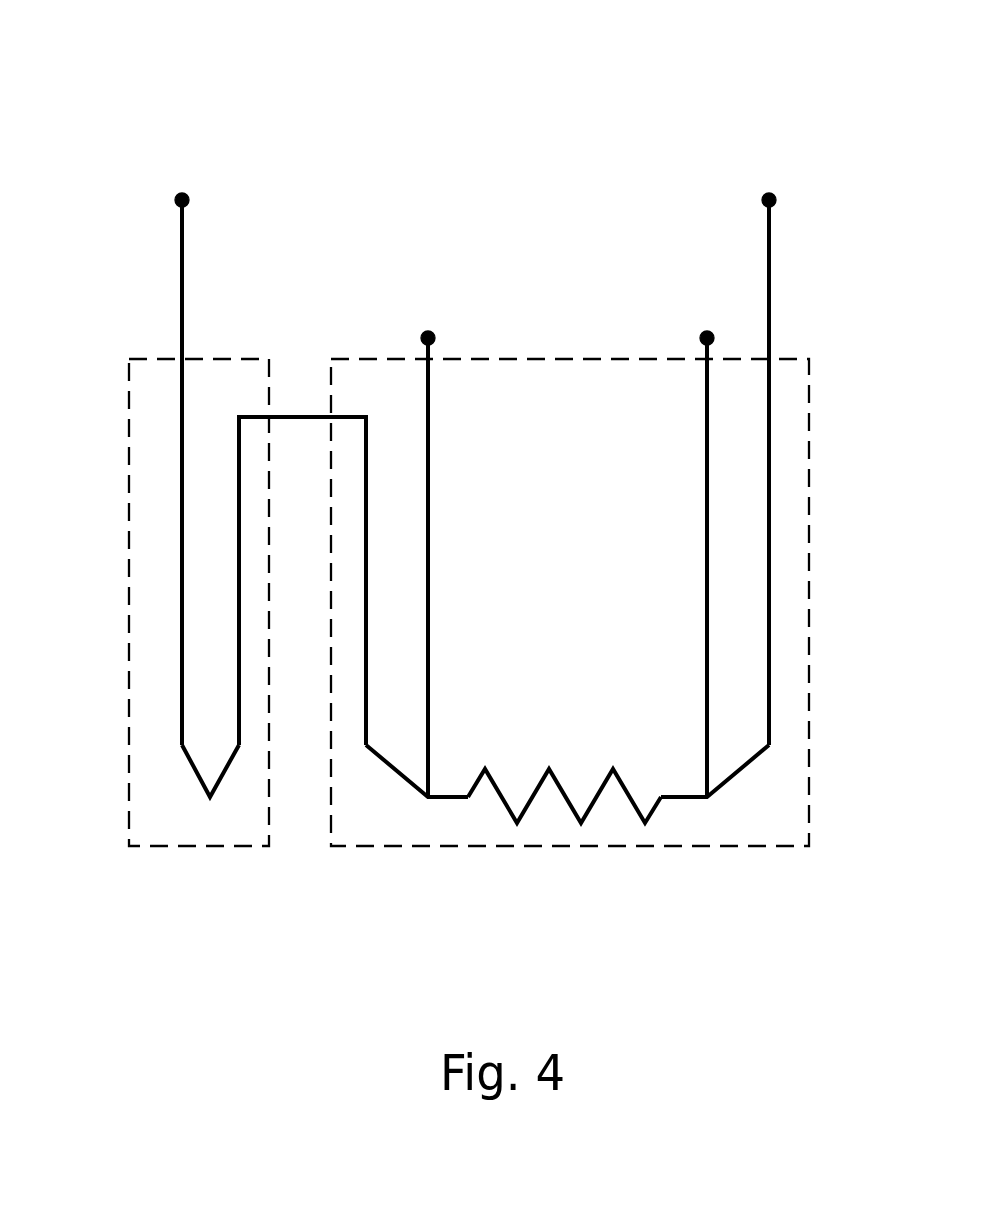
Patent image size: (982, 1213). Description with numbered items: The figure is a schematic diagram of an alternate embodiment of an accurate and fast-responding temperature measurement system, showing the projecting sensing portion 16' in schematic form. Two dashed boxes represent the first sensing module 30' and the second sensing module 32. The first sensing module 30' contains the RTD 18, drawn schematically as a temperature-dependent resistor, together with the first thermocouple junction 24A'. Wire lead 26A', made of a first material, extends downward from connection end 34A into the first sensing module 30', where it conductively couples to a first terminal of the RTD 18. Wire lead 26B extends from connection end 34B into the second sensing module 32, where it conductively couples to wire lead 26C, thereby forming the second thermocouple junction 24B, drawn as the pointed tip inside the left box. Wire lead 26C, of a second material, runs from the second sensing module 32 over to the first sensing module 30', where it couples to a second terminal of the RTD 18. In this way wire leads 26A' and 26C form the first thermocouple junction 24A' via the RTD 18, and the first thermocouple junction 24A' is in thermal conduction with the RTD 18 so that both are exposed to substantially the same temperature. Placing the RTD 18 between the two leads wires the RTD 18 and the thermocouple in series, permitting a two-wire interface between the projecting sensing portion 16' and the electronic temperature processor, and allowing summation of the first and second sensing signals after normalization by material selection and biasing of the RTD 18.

The projecting sensing portion 16' is at (435, 490).
The RTD 18 is at (593, 808).
The first thermocouple junction 24A' is at (564, 640).
The second thermocouple junction 24B is at (183, 777).
The wire lead 26A' is at (718, 472).
The wire lead 26B is at (183, 266).
The wire lead 26C is at (305, 415).
The first sensing module 30' is at (570, 655).
The second sensing module 32 is at (232, 848).
The connection end 34A is at (772, 180).
The connection end 34B is at (183, 180).